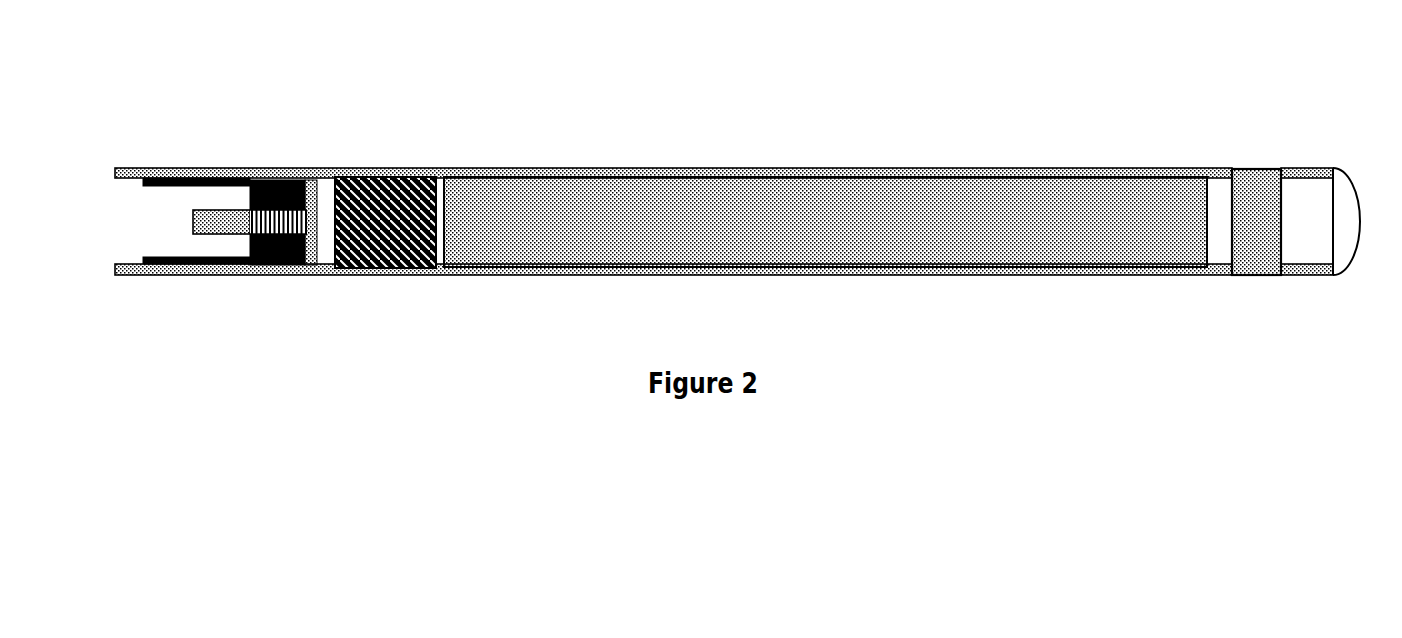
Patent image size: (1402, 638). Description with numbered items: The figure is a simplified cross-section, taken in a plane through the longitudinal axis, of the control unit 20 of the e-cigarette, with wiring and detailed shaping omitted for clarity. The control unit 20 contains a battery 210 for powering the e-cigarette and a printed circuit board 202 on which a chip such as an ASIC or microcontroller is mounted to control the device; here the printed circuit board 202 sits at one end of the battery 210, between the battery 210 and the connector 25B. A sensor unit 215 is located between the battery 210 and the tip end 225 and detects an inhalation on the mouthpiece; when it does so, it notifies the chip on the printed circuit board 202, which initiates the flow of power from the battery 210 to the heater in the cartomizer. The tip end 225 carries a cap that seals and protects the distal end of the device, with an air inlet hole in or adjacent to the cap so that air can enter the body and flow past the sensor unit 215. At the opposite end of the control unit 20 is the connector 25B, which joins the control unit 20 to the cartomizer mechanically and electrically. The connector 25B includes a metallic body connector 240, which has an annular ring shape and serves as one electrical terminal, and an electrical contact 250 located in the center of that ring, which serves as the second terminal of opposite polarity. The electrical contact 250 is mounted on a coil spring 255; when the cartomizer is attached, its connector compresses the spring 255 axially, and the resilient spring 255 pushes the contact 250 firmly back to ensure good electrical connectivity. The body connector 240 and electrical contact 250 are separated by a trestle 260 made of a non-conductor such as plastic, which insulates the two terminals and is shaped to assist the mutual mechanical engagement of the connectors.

The control unit 20 is at (724, 334).
The connector 25B is at (161, 130).
The body connector 240 is at (153, 310).
The electrical contact 250 is at (163, 307).
The coil spring 255 is at (218, 334).
The trestle 260 is at (330, 181).
The printed circuit board 202 is at (431, 265).
The battery 210 is at (825, 188).
The sensor unit 215 is at (1173, 169).
The tip end 225 is at (1335, 168).